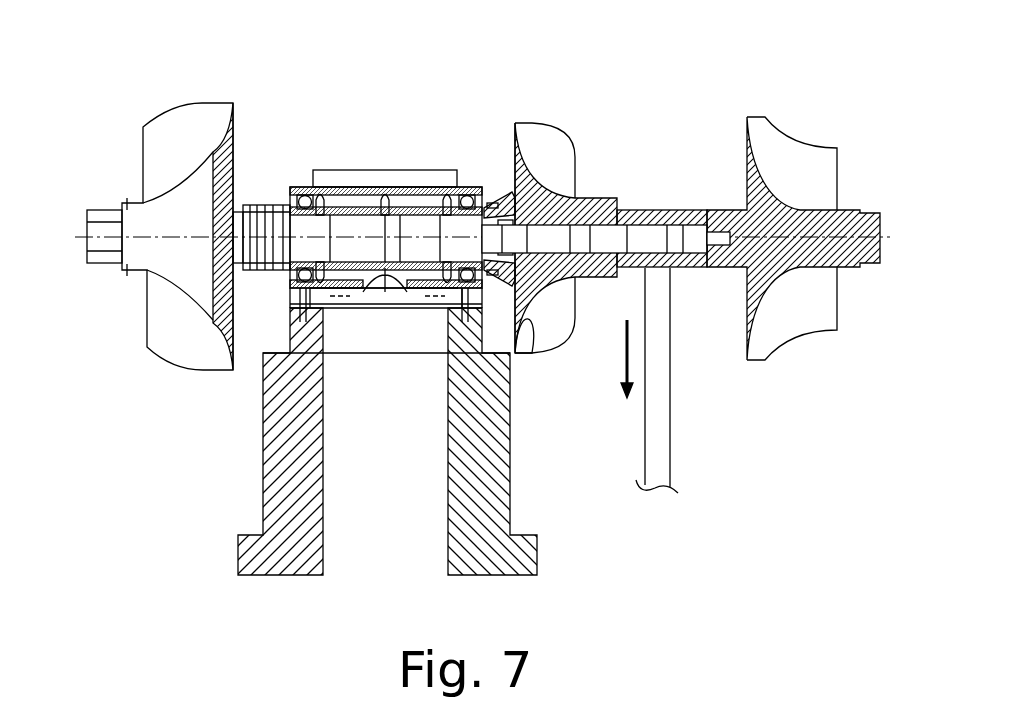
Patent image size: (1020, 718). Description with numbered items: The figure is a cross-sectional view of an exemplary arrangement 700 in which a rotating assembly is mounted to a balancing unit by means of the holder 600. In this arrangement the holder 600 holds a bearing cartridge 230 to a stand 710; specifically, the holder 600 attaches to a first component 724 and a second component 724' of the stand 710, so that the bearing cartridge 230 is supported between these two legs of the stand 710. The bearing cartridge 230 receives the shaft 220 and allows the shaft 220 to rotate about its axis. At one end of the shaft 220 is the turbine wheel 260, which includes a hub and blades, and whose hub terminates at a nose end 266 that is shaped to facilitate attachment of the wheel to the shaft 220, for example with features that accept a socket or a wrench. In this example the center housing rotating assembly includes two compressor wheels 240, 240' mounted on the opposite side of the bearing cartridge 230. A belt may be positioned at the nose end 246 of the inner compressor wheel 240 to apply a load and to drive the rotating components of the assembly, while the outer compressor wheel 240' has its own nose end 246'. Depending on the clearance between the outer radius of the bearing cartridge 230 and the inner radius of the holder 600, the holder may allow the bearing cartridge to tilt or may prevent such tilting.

The arrangement 700 is at (302, 62).
The turbine wheel 260 is at (160, 100).
The nose end 266 is at (112, 208).
The bearing cartridge 230 is at (470, 185).
The holder 600 is at (330, 170).
The shaft 220 is at (368, 247).
The compressor wheel 240 is at (583, 221).
The nose end 246 is at (604, 217).
The compressor wheel 240' is at (795, 228).
The nose end 246' is at (793, 244).
The stand 710 is at (200, 472).
The first component 724 is at (251, 441).
The second component 724' is at (523, 441).